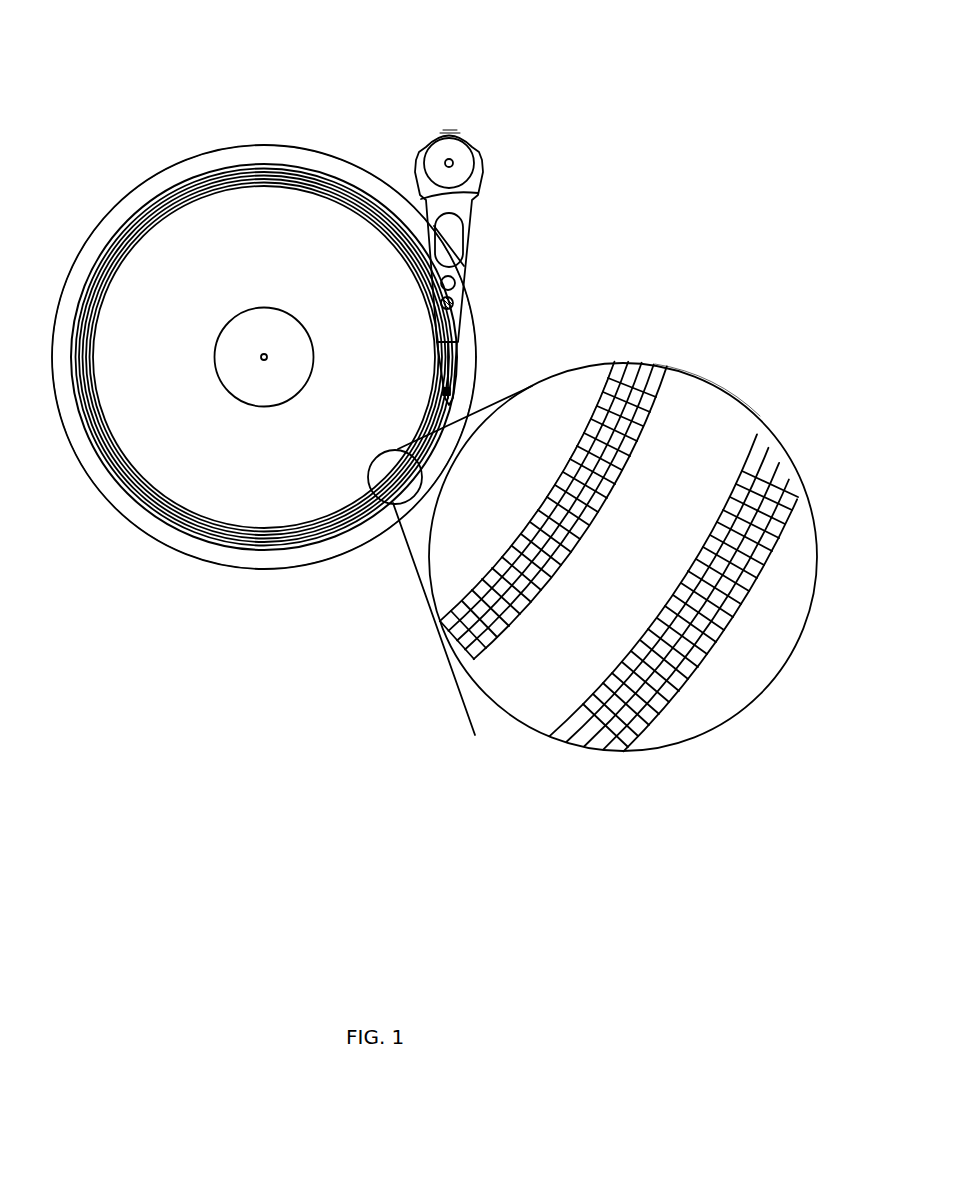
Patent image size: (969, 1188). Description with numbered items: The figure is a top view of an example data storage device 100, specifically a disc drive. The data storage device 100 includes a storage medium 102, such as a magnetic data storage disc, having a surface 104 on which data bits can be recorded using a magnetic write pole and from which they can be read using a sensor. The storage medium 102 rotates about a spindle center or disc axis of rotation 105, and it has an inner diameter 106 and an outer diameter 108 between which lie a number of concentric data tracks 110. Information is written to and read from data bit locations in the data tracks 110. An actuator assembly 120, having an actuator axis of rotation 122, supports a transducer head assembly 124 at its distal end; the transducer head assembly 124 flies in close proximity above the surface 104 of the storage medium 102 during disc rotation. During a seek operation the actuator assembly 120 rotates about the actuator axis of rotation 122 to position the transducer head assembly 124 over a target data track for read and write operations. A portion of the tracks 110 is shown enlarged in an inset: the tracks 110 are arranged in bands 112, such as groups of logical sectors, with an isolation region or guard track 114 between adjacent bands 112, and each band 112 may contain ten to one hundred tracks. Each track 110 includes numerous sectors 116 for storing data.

The data storage device 100 is at (157, 73).
The storage medium 102 is at (281, 146).
The surface 104 is at (157, 523).
The disc axis of rotation 105 is at (263, 357).
The inner diameter 106 is at (237, 314).
The outer diameter 108 is at (257, 548).
The data tracks 110 is at (298, 548).
The bands 112 is at (585, 432).
The guard track 114 is at (700, 431).
The sectors 116 is at (720, 642).
The actuator assembly 120 is at (474, 240).
The actuator axis of rotation 122 is at (455, 160).
The transducer head assembly 124 is at (432, 403).